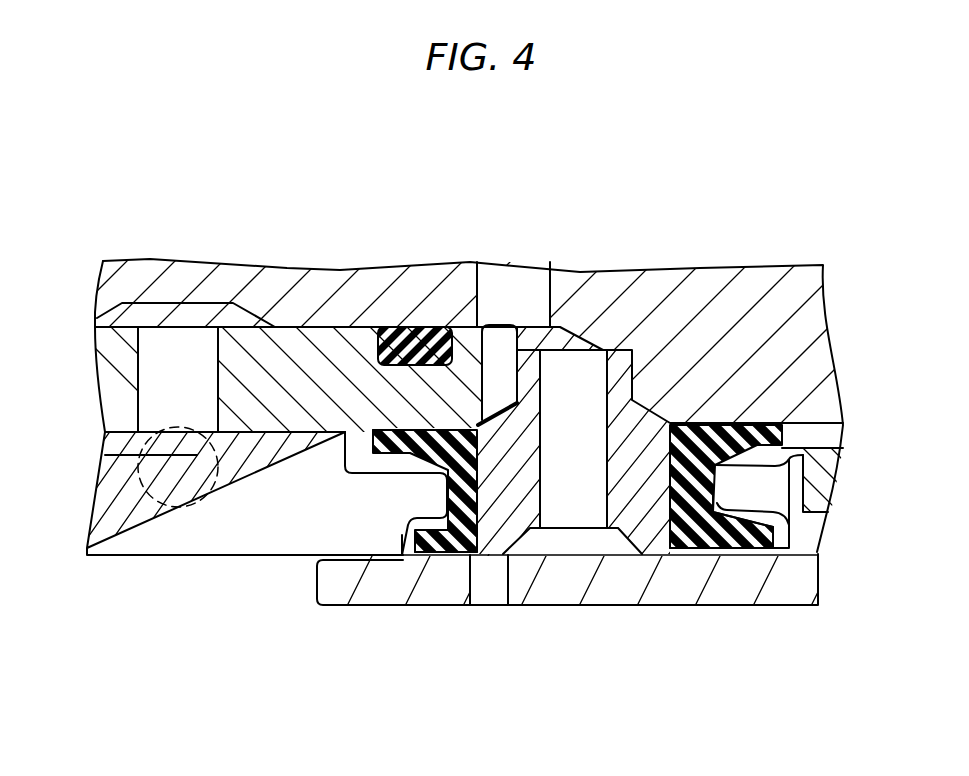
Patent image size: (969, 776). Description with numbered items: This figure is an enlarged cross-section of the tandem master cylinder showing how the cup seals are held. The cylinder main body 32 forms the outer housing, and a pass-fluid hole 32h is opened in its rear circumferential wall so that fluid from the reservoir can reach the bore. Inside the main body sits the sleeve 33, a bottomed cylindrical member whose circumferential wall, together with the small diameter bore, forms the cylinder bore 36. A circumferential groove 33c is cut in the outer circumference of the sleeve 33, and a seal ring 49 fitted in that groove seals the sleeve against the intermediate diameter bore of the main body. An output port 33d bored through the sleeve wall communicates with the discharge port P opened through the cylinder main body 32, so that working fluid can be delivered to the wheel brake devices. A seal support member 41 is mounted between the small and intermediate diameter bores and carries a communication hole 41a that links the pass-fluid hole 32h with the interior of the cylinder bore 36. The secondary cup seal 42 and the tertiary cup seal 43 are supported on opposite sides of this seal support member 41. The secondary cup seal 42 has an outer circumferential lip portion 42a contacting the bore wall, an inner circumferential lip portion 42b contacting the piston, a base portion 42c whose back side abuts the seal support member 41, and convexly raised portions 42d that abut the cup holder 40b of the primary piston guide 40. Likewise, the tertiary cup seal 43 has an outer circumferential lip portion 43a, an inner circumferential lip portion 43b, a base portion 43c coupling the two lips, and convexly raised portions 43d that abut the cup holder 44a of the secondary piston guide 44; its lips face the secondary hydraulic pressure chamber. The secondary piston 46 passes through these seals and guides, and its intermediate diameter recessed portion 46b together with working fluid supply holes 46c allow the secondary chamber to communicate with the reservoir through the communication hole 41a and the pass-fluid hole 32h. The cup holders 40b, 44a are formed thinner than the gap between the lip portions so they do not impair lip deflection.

The cylinder main body 32 is at (673, 268).
The pass-fluid hole 32h is at (505, 275).
The sleeve 33 is at (128, 322).
The circumferential groove 33c is at (430, 327).
The output port 33d is at (165, 387).
The cylinder bore 36 is at (208, 432).
The discharge port P is at (138, 445).
The primary piston guide 40 is at (827, 473).
The cup holder 40b is at (750, 493).
The seal support member 41 is at (549, 345).
The communication hole 41a is at (571, 378).
The secondary cup seal 42 is at (747, 423).
The outer circumferential lip portion 42a is at (765, 424).
The inner circumferential lip portion 42b is at (753, 520).
The base portion 42c is at (693, 525).
The convexly raised portions 42d is at (732, 515).
The tertiary cup seal 43 is at (460, 425).
The outer circumferential lip portion 43a is at (387, 428).
The inner circumferential lip portion 43b is at (438, 554).
The base portion 43c is at (467, 500).
The convexly raised portions 43d is at (420, 487).
The secondary piston guide 44 is at (205, 558).
The cup holder 44a is at (420, 502).
The secondary piston 46 is at (688, 608).
The intermediate diameter recessed portion 46b is at (645, 585).
The working fluid supply holes 46c is at (485, 590).
The seal ring 49 is at (412, 327).